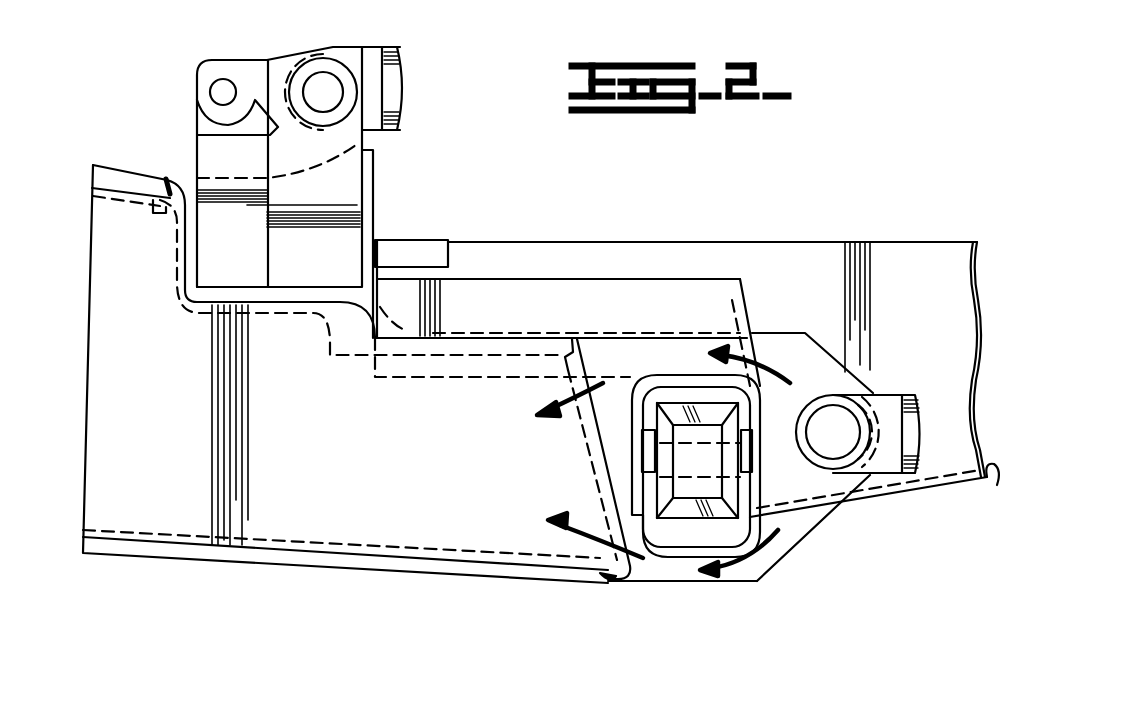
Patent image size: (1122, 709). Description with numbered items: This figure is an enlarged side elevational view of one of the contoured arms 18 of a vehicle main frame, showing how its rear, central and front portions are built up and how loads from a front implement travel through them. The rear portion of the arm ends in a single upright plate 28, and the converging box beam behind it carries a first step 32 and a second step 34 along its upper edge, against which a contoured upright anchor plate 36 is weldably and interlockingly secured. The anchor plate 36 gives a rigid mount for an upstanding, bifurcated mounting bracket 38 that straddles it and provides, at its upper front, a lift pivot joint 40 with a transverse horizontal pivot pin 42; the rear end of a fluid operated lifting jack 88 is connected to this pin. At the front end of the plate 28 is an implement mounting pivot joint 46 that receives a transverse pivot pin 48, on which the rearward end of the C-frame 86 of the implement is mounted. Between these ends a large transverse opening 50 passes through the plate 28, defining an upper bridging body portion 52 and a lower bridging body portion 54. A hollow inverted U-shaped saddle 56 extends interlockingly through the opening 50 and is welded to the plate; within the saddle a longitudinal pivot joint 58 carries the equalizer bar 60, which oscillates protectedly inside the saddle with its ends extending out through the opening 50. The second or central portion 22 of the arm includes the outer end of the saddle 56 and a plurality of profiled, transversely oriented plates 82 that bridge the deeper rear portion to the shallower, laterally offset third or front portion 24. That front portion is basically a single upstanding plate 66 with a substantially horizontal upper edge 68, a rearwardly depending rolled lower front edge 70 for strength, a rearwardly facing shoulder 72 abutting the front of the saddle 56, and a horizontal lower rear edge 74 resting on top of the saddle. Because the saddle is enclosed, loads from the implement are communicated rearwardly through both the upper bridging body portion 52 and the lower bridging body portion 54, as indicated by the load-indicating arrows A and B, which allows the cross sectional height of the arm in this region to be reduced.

The contoured arms 18 is at (725, 243).
The second or central portion 22 is at (540, 302).
The third or front portion 24 is at (957, 488).
The upright plate 28 is at (805, 520).
The first step 32 is at (233, 300).
The second step 34 is at (447, 345).
The anchor plate 36 is at (374, 182).
The mounting bracket 38 is at (207, 149).
The lift pivot joint 40 is at (356, 92).
The pivot pin 42 is at (323, 88).
The implement mounting pivot joint 46 is at (872, 407).
The pivot pin 48 is at (828, 447).
The transverse opening 50 is at (698, 566).
The upper bridging body portion 52 is at (680, 342).
The lower bridging body portion 54 is at (661, 581).
The saddle 56 is at (672, 377).
The pivot joint 58 is at (696, 498).
The equalizer bar 60 is at (667, 487).
The upstanding plate 66 is at (915, 262).
The upper edge 68 is at (565, 262).
The lower front rolled edge 70 is at (997, 487).
The rearwardly facing shoulder 72 is at (748, 478).
The horizontal lower rear edge 74 is at (432, 377).
The profiled plates 82 is at (705, 283).
The C-frame 86 is at (918, 430).
The lifting jacks 88 is at (400, 65).
The load-indicating arrow A is at (753, 358).
The load-indicating arrow B is at (750, 560).